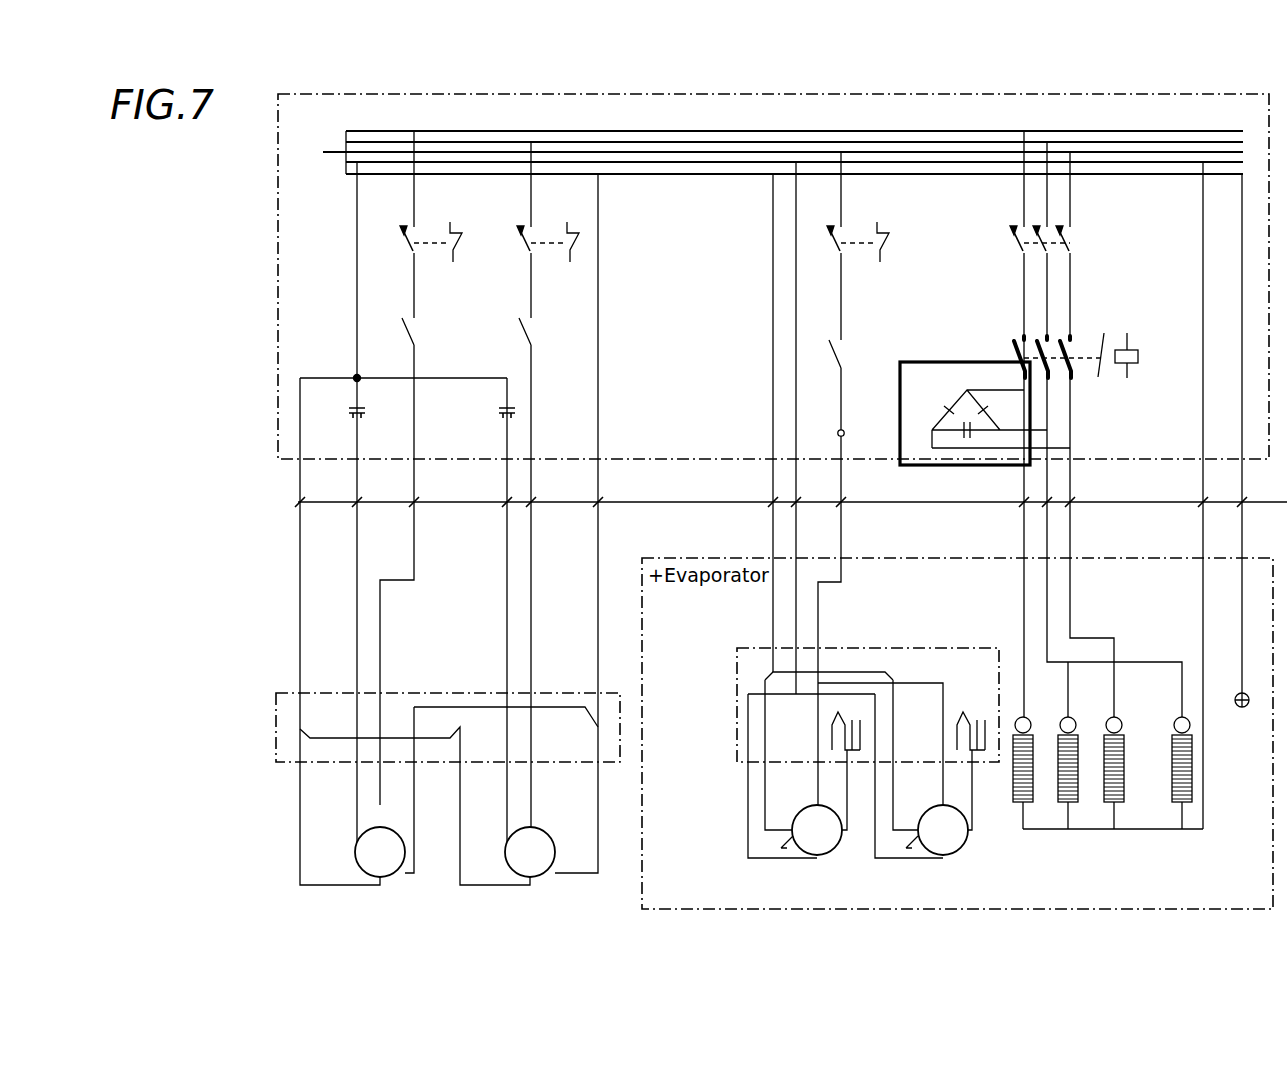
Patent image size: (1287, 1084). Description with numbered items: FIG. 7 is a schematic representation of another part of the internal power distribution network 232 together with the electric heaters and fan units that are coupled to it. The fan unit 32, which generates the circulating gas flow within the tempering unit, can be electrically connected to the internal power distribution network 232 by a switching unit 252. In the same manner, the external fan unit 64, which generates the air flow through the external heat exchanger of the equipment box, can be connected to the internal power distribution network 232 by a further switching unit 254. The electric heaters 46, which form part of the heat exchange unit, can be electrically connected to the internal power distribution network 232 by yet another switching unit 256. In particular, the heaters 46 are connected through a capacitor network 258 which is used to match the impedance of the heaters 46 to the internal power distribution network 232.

The internal power distribution network 232 is at (715, 152).
The switching unit 252 is at (400, 371).
The switching unit 254 is at (780, 360).
The switching unit 256 is at (1073, 280).
The capacitor network 258 is at (985, 440).
The fan unit 32 is at (445, 856).
The external fan unit 64 is at (852, 850).
The heaters 46 is at (1128, 760).